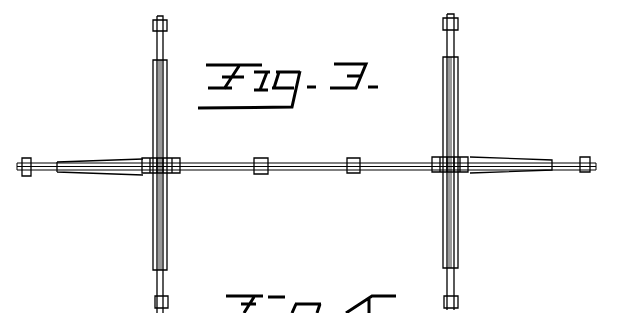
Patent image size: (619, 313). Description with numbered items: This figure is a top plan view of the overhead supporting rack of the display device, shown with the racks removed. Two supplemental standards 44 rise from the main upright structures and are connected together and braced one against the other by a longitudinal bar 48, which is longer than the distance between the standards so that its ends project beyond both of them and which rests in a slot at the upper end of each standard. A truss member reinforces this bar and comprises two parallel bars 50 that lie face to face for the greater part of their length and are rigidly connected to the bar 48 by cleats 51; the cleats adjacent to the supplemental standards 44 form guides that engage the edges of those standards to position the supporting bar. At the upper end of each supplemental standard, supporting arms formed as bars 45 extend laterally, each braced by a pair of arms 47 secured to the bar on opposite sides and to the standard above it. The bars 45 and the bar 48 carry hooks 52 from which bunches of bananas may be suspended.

The supplemental standard 44 is at (167, 174).
The bar 45 is at (165, 280).
The arm 47 is at (138, 164).
The bar 48 is at (45, 163).
The truss bar 50 is at (118, 172).
The cleat 51 is at (176, 162).
The hook 52 is at (167, 25).